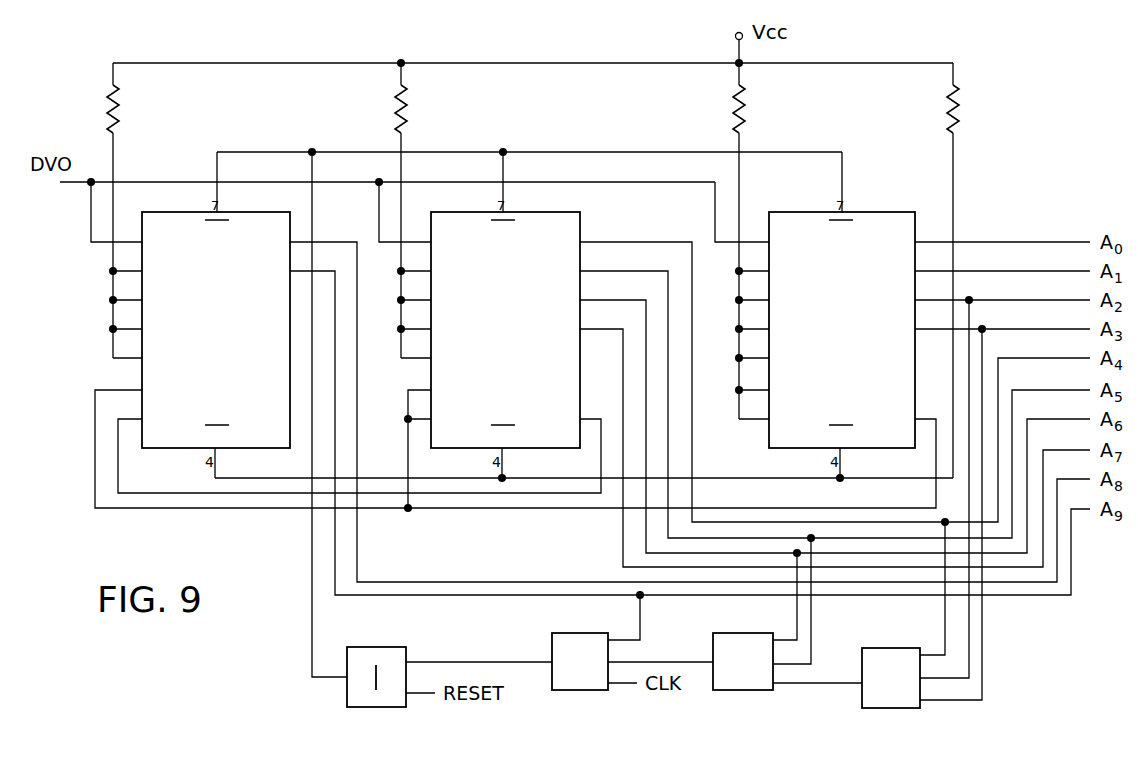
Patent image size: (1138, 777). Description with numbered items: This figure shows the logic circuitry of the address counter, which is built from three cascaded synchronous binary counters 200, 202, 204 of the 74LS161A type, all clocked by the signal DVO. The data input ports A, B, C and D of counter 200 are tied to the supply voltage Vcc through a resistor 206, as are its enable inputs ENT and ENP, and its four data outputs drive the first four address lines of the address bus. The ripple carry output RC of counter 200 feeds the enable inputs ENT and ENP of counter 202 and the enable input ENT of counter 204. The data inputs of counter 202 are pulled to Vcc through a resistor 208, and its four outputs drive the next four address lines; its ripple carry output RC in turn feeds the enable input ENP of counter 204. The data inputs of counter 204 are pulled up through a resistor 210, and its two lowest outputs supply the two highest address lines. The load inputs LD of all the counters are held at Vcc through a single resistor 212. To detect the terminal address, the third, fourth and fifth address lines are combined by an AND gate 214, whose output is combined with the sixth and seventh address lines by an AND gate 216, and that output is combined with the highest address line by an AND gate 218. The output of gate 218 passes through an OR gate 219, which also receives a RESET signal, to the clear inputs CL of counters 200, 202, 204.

The synchronous binary counter 200 is at (870, 215).
The synchronous binary counter 202 is at (580, 219).
The synchronous binary counter 204 is at (197, 212).
The resistor 206 is at (754, 105).
The resistor 208 is at (416, 105).
The resistor 210 is at (128, 105).
The resistor 212 is at (968, 105).
The AND gate 214 is at (900, 650).
The AND gate 216 is at (740, 640).
The AND gate 218 is at (560, 640).
The OR gate 219 is at (357, 697).